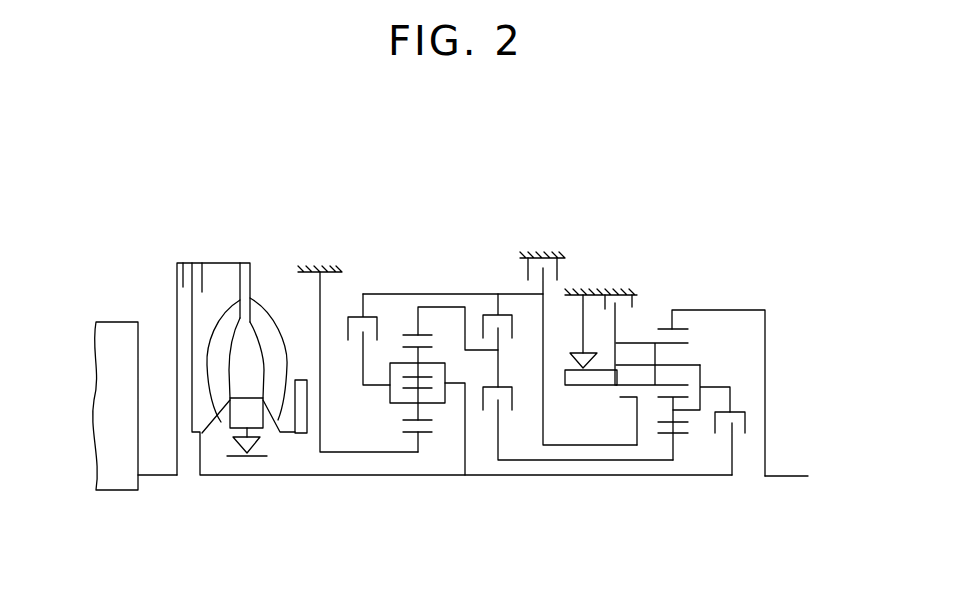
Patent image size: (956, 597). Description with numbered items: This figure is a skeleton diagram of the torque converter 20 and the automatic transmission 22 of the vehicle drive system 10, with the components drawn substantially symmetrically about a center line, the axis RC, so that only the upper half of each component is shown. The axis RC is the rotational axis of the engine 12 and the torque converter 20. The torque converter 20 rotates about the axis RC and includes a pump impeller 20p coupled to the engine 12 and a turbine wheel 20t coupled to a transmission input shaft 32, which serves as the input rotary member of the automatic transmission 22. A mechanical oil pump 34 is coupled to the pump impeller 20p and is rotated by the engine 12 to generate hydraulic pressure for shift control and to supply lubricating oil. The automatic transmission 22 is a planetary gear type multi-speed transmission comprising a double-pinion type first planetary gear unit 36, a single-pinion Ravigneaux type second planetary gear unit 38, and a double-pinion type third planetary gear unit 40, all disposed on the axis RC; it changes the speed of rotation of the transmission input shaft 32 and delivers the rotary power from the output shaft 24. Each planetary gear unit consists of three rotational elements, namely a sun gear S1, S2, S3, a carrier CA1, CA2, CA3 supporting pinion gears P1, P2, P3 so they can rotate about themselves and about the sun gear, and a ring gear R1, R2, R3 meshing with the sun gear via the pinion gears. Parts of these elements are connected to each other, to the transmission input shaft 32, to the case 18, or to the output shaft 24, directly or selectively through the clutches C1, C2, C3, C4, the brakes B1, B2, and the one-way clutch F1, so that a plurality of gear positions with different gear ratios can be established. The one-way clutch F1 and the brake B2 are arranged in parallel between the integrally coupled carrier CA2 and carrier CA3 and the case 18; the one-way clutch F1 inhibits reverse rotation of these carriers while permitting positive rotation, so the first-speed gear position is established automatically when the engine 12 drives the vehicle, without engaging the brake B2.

The vehicle power transmission device 10 is at (246, 146).
The engine 12 is at (113, 322).
The case 18 is at (309, 267).
The torque converter 20 is at (257, 230).
The pump impeller 20p is at (272, 330).
The turbine wheel 20t is at (223, 318).
The automatic transmission 22 is at (420, 236).
The output shaft 24 is at (786, 478).
The transmission input shaft 32 is at (253, 476).
The mechanical oil pump 34 is at (301, 378).
The first planetary gear unit 36 is at (411, 427).
The second planetary gear unit 38 is at (658, 409).
The third planetary gear unit 40 is at (675, 478).
The brake B1 is at (527, 270).
The brake B2 is at (632, 298).
The clutch C1 is at (512, 400).
The clutch C2 is at (750, 430).
The clutch C3 is at (512, 322).
The clutch C4 is at (350, 333).
The carrier CA1 is at (390, 394).
The carrier CA2 is at (702, 383).
The carrier CA3 is at (686, 364).
The one-way clutch F1 is at (584, 357).
The pinion gear P1 is at (404, 336).
The pinion gear P2 is at (628, 342).
The pinion gear P3 is at (658, 415).
The ring gear R1 is at (421, 334).
The ring gear R2 is at (672, 311).
The ring gear R3 is at (718, 377).
The axis RC is at (798, 472).
The sun gear S1 is at (435, 453).
The sun gear S2 is at (630, 401).
The sun gear S3 is at (685, 454).